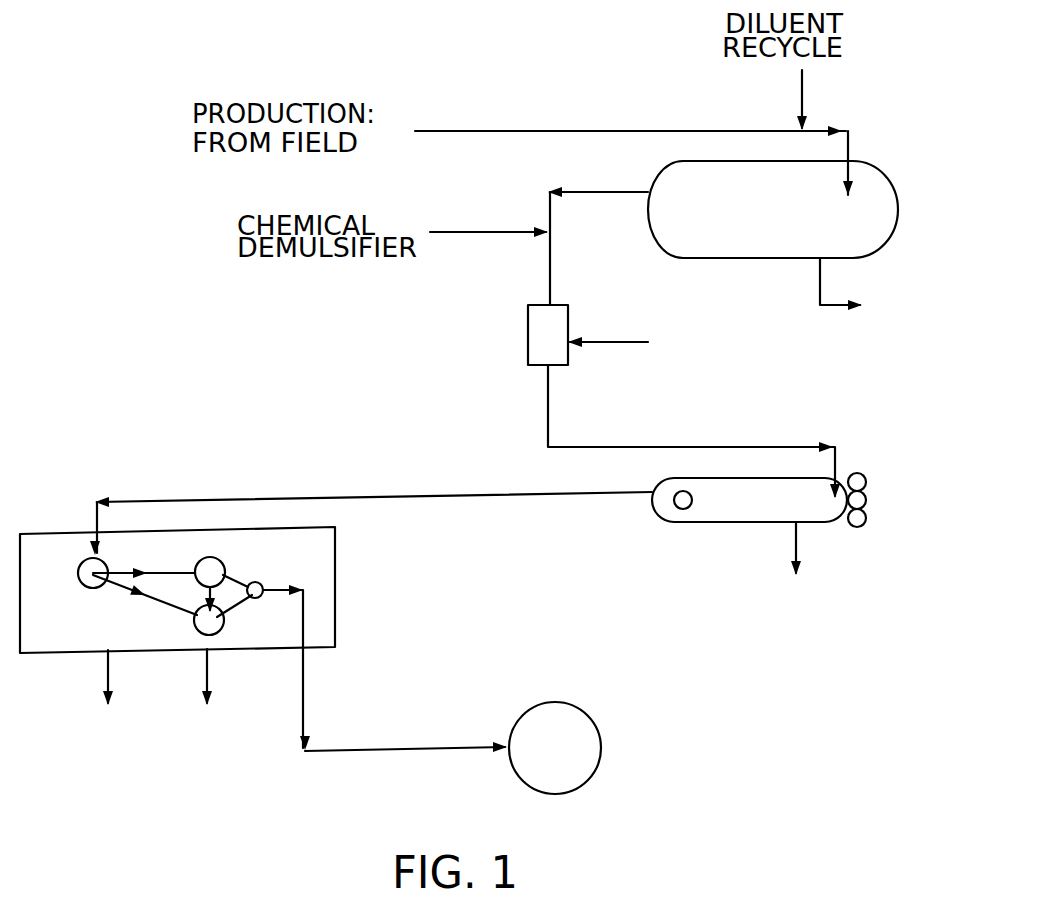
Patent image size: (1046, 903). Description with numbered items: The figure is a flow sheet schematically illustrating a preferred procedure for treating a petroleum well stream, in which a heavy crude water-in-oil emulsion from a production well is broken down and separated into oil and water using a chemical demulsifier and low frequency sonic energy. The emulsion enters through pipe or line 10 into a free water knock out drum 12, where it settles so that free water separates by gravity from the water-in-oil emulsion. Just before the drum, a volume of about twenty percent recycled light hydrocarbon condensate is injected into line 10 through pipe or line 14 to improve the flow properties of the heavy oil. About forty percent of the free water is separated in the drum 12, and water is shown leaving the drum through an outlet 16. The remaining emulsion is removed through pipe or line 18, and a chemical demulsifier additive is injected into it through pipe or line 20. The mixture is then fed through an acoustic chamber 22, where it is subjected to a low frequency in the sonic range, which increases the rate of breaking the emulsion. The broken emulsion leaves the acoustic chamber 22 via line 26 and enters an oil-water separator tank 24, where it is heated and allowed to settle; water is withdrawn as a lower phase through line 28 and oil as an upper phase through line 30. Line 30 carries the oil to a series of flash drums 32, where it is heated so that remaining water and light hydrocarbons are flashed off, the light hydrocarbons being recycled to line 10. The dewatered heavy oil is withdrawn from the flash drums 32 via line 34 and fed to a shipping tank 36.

The pipe or line 10 is at (545, 131).
The free water knock out drum 12 is at (884, 161).
The pipe or line 14 is at (804, 84).
The water outlet 16 is at (820, 285).
The pipe or line 18 is at (603, 192).
The pipe or line 20 is at (452, 232).
The acoustic chamber 22 is at (562, 305).
The oil-water separator tank 24 is at (830, 524).
The line 26 is at (680, 446).
The line 28 is at (796, 535).
The line 30 is at (515, 492).
The flash drums 32 is at (88, 635).
The line 34 is at (335, 752).
The shipping tank 36 is at (586, 714).